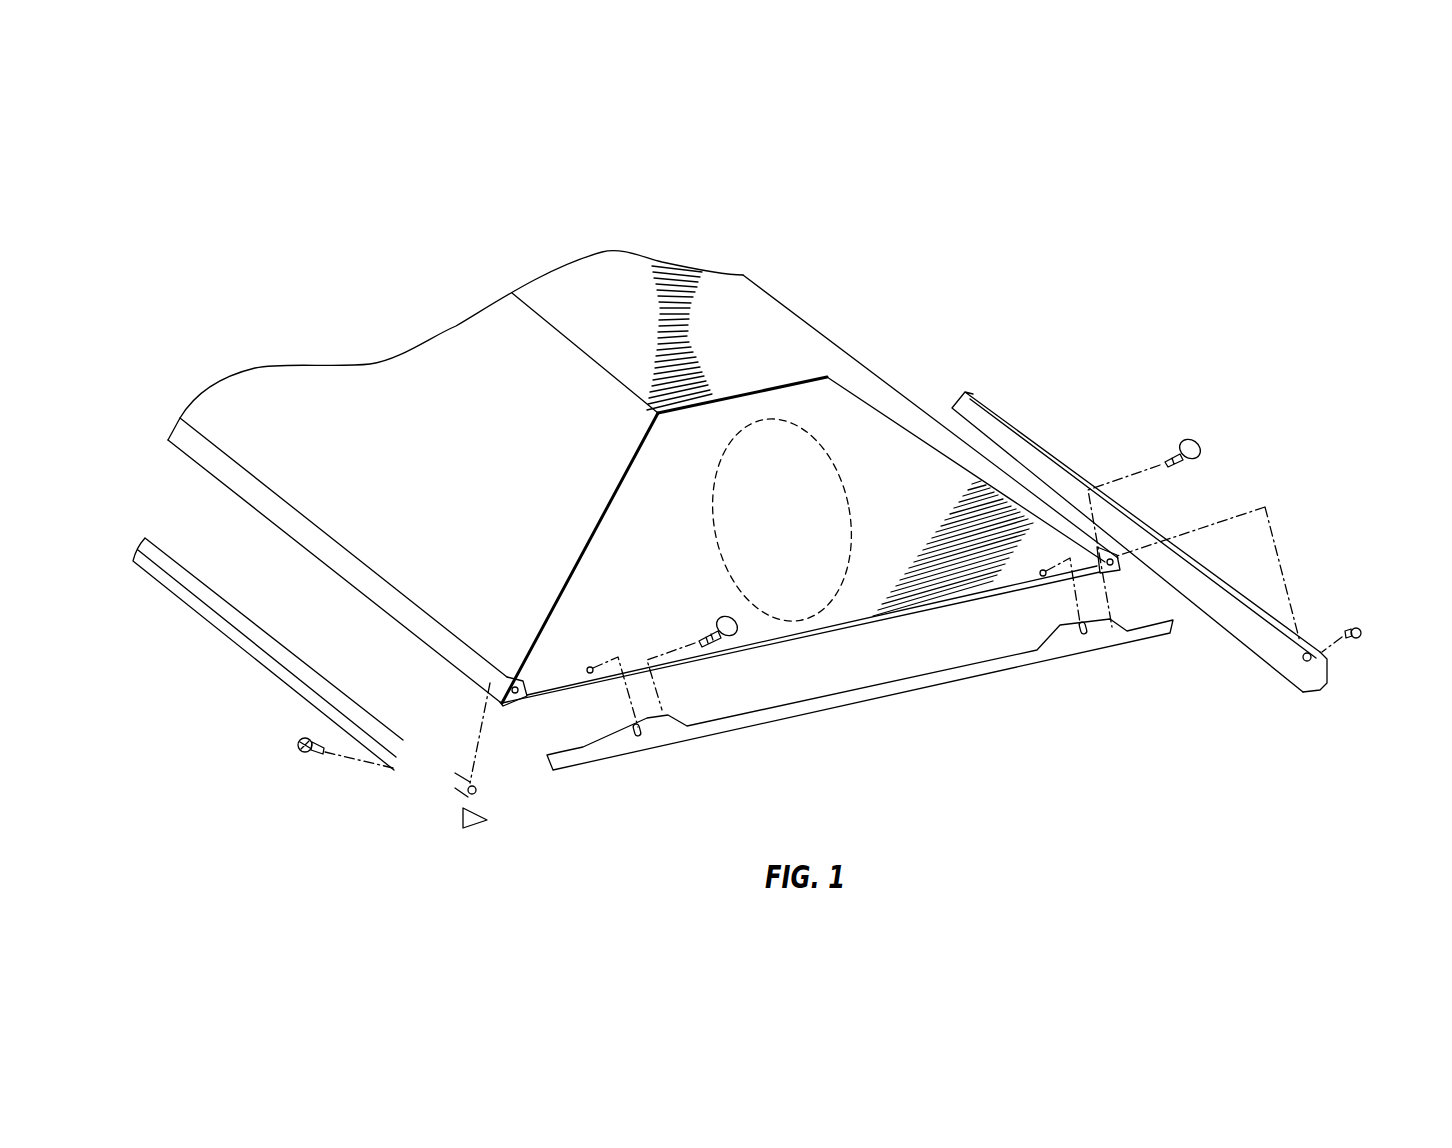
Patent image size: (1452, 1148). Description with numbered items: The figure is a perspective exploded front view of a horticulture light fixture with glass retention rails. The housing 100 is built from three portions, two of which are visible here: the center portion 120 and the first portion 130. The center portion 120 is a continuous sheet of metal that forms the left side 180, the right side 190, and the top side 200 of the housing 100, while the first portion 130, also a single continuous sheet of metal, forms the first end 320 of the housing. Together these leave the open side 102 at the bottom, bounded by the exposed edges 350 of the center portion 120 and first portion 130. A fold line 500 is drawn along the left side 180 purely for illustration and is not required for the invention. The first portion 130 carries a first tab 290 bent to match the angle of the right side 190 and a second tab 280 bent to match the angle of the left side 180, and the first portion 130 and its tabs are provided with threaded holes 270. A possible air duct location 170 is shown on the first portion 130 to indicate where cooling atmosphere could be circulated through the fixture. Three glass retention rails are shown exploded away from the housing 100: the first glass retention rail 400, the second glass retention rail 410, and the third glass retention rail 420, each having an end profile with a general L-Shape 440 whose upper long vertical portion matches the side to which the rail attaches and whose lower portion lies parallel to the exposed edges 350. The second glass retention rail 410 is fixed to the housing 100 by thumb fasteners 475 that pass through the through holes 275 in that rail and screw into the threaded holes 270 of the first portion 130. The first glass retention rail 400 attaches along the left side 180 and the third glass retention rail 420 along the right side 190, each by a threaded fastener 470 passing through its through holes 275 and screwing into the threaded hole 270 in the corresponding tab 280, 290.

The housing 100 is at (554, 182).
The center portion 120 is at (459, 324).
The right side 190 is at (806, 310).
The top side 200 is at (780, 378).
The first portion 130 is at (924, 505).
The air duct location 170 is at (810, 519).
The first end 320 is at (692, 567).
The left side 180 is at (288, 545).
The fold line 500 is at (275, 480).
The exposed edges 350 is at (355, 600).
The open side 102 is at (438, 657).
The second tab 280 is at (534, 738).
The first tab 290 is at (1164, 611).
The threaded holes 270 is at (518, 676).
The first glass retention rail 400 is at (200, 587).
The third glass retention rail 420 is at (1023, 433).
The second glass retention rail 410 is at (857, 708).
The L-Shape 440 is at (484, 833).
The through holes 275 is at (634, 728).
The threaded fastener 470 is at (299, 745).
The thumb fasteners 475 is at (716, 618).